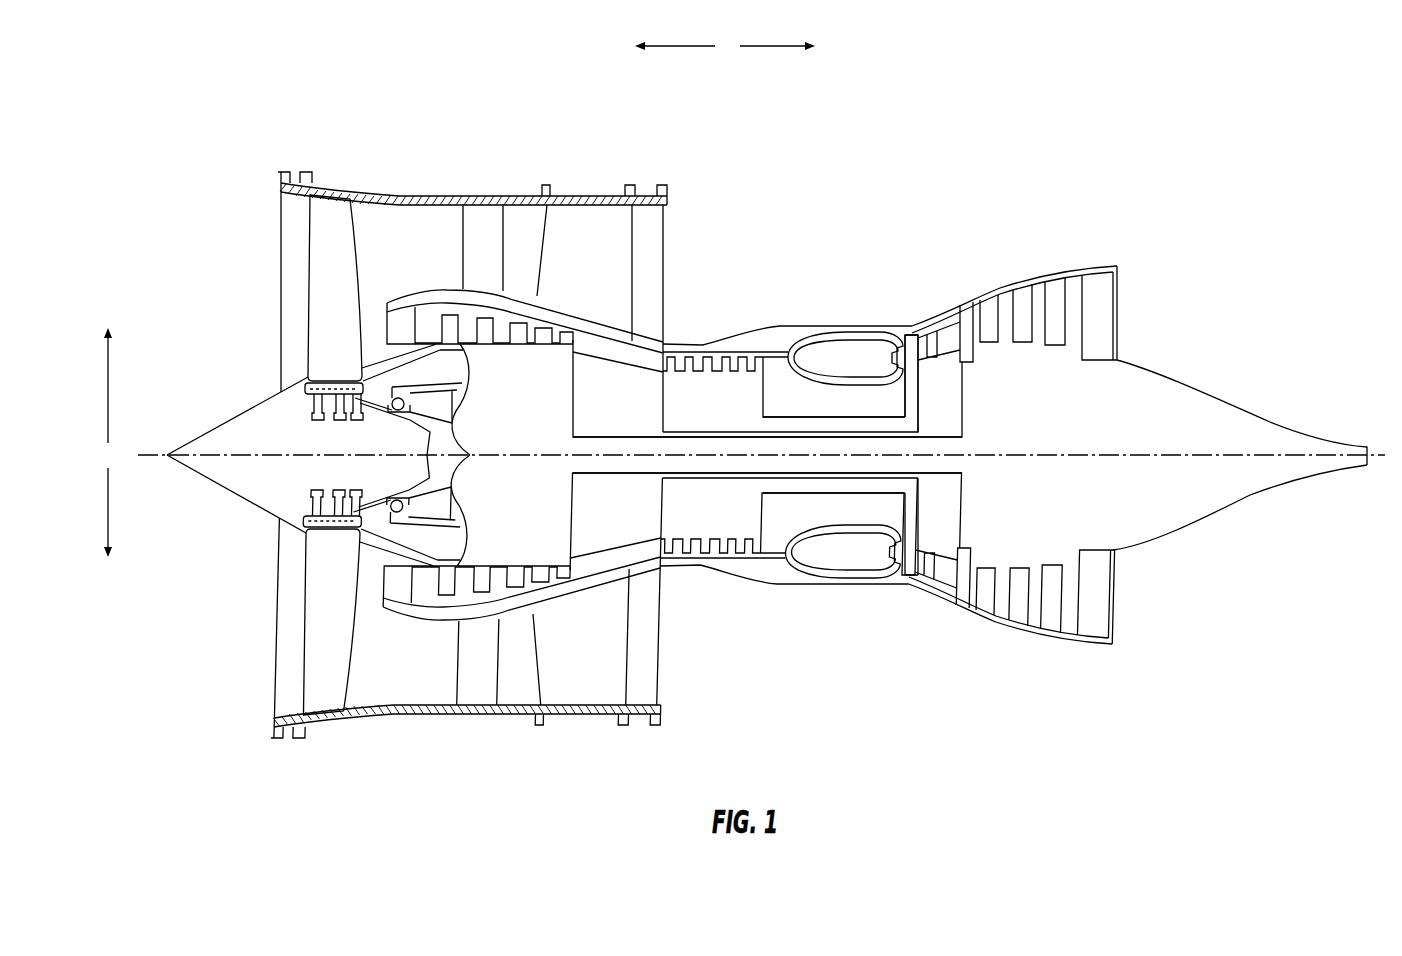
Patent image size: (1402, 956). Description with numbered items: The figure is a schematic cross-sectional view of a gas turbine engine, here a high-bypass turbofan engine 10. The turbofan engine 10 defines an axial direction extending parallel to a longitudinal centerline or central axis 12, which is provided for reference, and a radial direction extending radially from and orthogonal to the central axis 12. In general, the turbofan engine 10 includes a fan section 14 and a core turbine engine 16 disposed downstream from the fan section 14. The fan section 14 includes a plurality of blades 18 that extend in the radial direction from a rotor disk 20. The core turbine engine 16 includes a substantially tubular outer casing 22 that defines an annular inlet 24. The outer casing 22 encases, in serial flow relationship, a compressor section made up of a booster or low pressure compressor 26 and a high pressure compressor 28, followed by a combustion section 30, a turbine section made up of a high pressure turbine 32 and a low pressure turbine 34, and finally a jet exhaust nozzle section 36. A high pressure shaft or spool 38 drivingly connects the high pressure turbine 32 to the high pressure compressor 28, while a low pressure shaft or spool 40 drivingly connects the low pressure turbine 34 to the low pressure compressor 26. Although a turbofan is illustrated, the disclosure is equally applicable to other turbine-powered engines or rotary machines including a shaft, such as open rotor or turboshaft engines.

The turbofan engine 10 is at (843, 140).
The central axis 12 is at (1150, 453).
The fan section 14 is at (360, 223).
The core turbine engine 16 is at (803, 305).
The blades 18 is at (322, 257).
The rotor disk 20 is at (305, 410).
The outer casing 22 is at (864, 586).
The annular inlet 24 is at (387, 602).
The low pressure compressor 26 is at (480, 585).
The high pressure compressor 28 is at (703, 548).
The combustion section 30 is at (789, 565).
The high pressure turbine 32 is at (913, 338).
The low pressure turbine 34 is at (980, 320).
The jet exhaust nozzle section 36 is at (1117, 597).
The high pressure shaft 38 is at (800, 415).
The low pressure shaft 40 is at (619, 440).